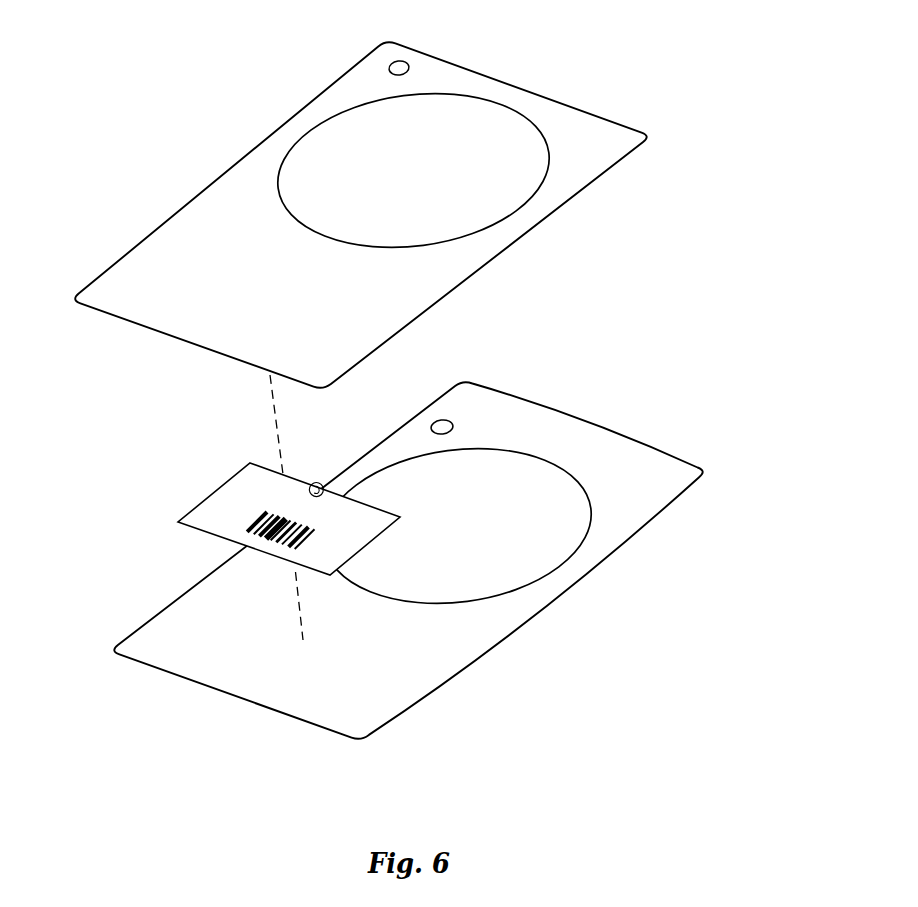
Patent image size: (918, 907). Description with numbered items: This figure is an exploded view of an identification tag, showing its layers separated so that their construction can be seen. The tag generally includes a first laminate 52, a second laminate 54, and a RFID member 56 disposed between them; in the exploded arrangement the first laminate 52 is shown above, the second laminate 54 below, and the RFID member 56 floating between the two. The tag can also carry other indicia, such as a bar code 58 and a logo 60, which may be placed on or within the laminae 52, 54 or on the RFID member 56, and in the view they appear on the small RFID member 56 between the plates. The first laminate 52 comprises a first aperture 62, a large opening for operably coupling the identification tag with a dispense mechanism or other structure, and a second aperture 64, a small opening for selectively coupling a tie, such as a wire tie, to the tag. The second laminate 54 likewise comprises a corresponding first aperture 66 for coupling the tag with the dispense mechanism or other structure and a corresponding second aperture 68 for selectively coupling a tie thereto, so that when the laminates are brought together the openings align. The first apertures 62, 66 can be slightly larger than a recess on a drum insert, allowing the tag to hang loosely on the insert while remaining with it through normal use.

The first laminate 52 is at (203, 255).
The second laminate 54 is at (423, 663).
The RFID member 56 is at (377, 522).
The bar code 58 is at (243, 518).
The logo 60 is at (282, 492).
The first aperture 62 is at (548, 143).
The second aperture 64 is at (388, 65).
The corresponding first aperture 66 is at (583, 485).
The corresponding second aperture 68 is at (455, 423).